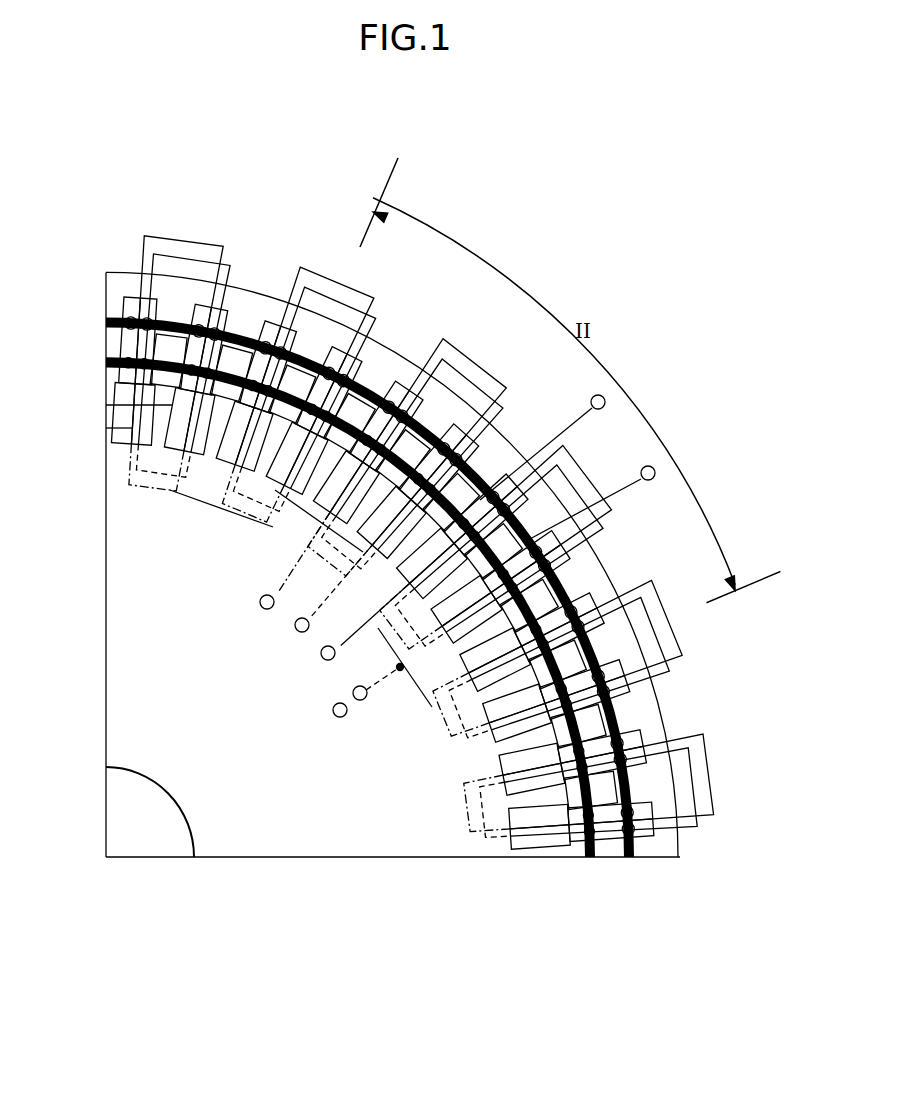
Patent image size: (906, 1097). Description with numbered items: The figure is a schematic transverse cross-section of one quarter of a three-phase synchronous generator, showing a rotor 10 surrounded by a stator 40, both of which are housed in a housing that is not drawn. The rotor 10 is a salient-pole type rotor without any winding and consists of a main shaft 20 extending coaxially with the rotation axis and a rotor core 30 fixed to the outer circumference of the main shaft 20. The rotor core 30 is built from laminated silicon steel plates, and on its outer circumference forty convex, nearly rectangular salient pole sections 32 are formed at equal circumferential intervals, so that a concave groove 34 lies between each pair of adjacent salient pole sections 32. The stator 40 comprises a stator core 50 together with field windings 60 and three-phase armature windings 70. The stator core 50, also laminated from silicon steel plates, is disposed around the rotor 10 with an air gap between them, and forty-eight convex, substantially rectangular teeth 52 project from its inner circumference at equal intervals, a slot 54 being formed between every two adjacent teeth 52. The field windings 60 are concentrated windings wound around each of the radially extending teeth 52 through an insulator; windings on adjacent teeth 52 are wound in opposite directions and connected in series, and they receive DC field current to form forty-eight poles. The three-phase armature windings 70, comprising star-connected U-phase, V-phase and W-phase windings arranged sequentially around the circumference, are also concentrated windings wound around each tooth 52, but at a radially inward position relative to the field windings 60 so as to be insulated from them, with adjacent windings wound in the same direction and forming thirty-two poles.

The rotor 10 is at (244, 898).
The main shaft 20 is at (150, 842).
The rotor core 30 is at (330, 842).
The salient pole sections 32 is at (114, 405).
The concave groove 34 is at (128, 428).
The stator 40 is at (472, 329).
The stator core 50 is at (598, 568).
The teeth 52 is at (245, 328).
The slot 54 is at (118, 334).
The field windings 60 is at (628, 856).
The three-phase armature windings 70 is at (590, 856).